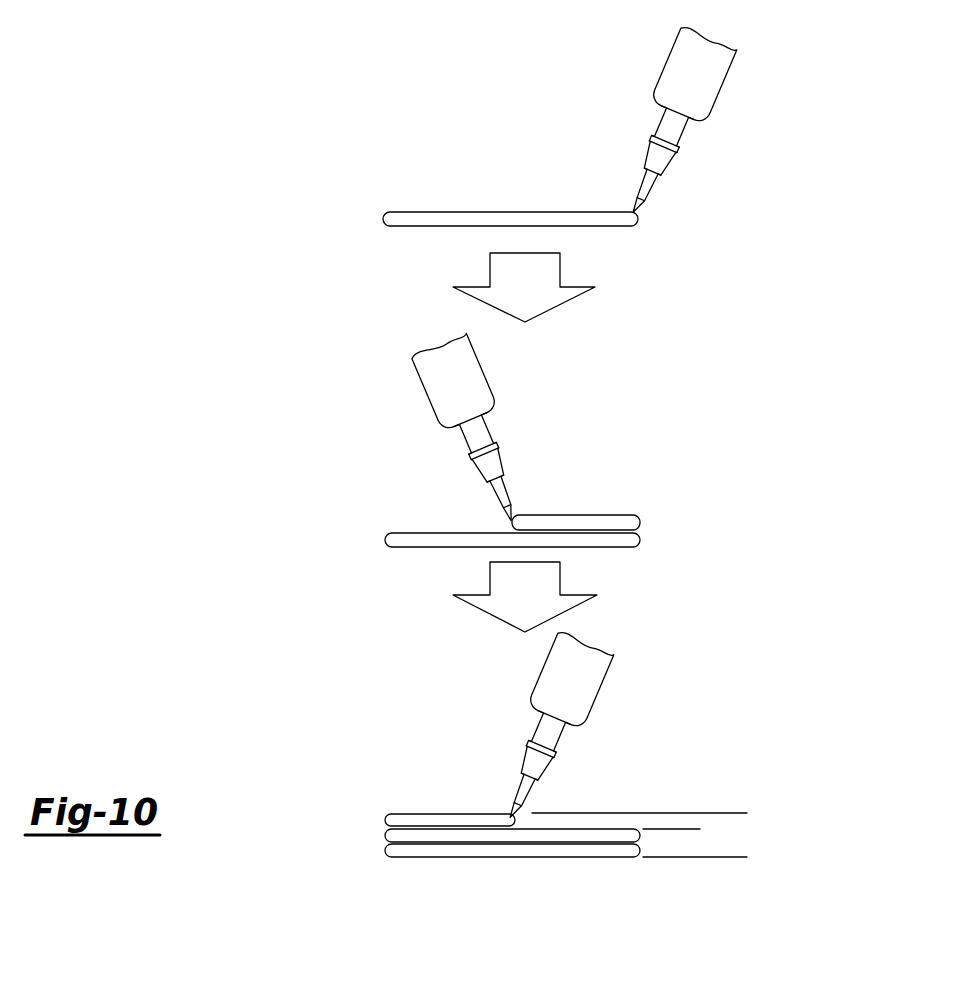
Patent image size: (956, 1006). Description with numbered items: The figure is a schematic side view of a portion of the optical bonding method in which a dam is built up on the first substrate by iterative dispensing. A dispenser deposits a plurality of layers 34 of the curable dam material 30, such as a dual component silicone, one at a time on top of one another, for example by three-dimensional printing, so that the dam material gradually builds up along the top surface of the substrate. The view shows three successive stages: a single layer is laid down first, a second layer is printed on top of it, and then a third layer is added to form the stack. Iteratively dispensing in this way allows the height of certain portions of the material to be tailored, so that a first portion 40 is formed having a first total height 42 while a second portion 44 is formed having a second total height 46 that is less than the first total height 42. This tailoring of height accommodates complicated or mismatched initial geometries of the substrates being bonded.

The dam material 30 is at (519, 496).
The plurality of layers 34 is at (477, 212).
The first portion 40 is at (442, 870).
The second portion 44 is at (553, 870).
The second total height 46 is at (672, 788).
The first total height 42 is at (725, 773).